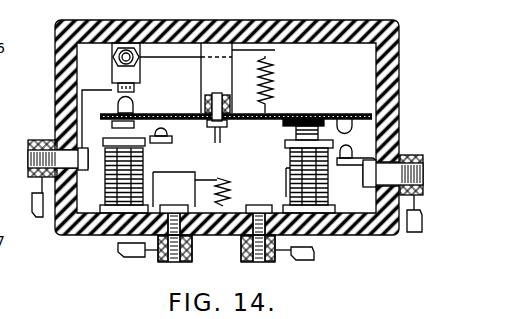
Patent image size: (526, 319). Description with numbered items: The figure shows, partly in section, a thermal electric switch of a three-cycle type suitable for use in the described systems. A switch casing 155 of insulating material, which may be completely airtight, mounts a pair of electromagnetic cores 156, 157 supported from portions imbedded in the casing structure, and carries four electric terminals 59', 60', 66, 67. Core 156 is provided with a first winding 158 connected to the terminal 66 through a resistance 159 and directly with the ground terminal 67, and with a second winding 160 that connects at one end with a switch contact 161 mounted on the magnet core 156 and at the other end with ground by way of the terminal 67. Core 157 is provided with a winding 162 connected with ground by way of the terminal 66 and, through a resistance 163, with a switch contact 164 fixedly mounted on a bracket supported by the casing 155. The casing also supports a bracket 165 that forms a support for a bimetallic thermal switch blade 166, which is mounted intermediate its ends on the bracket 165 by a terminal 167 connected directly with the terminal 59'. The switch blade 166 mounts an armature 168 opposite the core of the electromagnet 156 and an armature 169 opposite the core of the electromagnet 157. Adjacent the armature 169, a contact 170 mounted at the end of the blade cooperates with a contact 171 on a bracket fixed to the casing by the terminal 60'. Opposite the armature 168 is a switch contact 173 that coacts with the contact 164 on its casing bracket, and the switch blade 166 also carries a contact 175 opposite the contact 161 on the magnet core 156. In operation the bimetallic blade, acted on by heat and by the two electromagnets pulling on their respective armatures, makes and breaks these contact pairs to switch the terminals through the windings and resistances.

The switch casing 155 is at (214, 19).
The switch contact 164 is at (142, 83).
The bracket 165 is at (267, 53).
The switch contact 173 is at (135, 104).
The bimetallic thermal switch blade 166 is at (243, 120).
The armature 168 is at (112, 125).
The switch contact 161 is at (172, 131).
The contact 175 is at (207, 124).
The terminal 167 is at (221, 133).
The resistance 163 is at (275, 74).
The armature 169 is at (292, 119).
The winding 162 is at (296, 164).
The electromagnetic core 157 is at (333, 208).
The second winding 160 is at (148, 157).
The electromagnetic core 156 is at (108, 180).
The first winding 158 is at (185, 189).
The resistance 159 is at (232, 186).
The contact 170 is at (355, 128).
The contact 171 is at (345, 164).
The electric terminal 59' is at (50, 171).
The electric terminal 60' is at (400, 181).
The ground terminal 67 is at (177, 263).
The electric terminal 66 is at (262, 263).